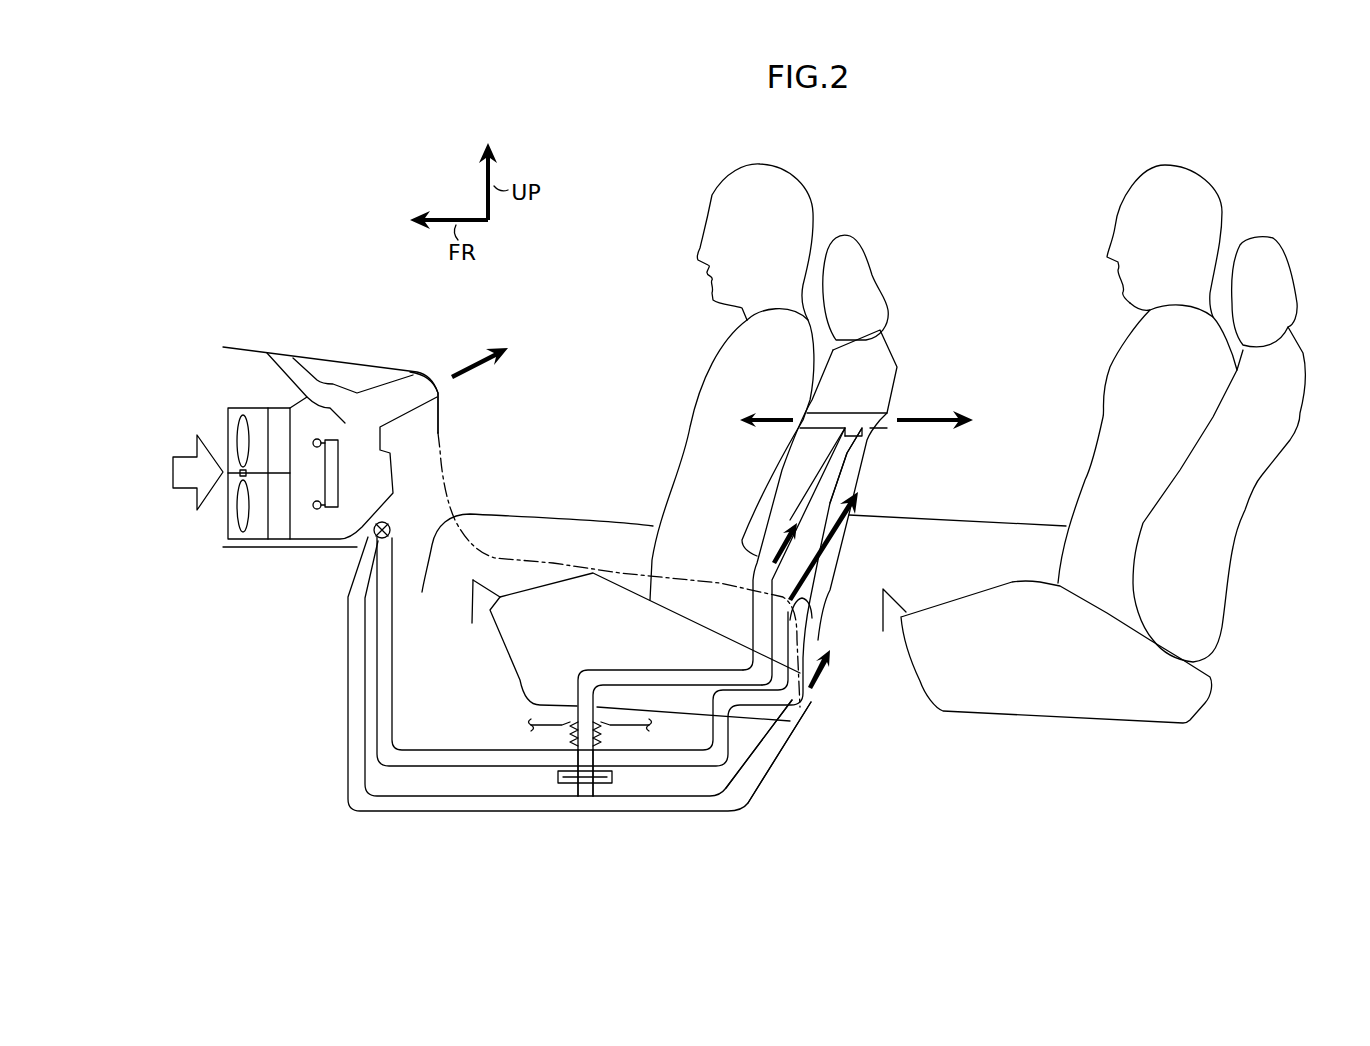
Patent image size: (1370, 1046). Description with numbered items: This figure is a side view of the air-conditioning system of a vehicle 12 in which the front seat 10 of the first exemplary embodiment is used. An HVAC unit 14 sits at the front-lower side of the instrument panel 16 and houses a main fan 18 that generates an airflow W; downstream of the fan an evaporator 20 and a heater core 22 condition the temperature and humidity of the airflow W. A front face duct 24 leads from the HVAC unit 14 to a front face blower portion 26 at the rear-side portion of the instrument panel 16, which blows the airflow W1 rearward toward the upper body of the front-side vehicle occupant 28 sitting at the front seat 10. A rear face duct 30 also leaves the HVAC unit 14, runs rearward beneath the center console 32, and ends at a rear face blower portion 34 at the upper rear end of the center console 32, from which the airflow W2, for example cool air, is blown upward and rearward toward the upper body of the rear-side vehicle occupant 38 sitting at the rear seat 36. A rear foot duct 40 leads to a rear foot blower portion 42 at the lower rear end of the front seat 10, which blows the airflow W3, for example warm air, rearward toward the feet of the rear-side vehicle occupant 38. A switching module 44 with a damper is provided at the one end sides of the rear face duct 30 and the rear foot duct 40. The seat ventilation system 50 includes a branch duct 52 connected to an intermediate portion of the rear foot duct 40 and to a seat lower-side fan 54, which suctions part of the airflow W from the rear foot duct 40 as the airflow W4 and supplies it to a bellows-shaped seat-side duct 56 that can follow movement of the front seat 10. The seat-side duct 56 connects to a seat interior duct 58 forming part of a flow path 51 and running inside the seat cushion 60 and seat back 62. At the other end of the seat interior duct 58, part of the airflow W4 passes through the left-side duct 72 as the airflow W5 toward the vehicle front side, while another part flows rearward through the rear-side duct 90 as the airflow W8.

The front seat 10 is at (912, 300).
The vehicle 12 is at (300, 292).
The HVAC unit 14 is at (238, 385).
The instrument panel 16 is at (322, 354).
The main fan 18 is at (256, 541).
The evaporator 20 is at (300, 541).
The heater core 22 is at (340, 480).
The front face duct 24 is at (377, 383).
The front face blower portion 26 is at (415, 372).
The front-side vehicle occupant 28 is at (690, 408).
The rear face duct 30 is at (392, 703).
The center console 32 is at (538, 562).
The rear face blower portion 34 is at (812, 612).
The rear seat 36 is at (1265, 510).
The rear-side vehicle occupant 38 is at (1105, 335).
The rear foot duct 40 is at (658, 812).
The rear foot blower portion 42 is at (808, 716).
The switching module 44 is at (373, 511).
The seat ventilation system 50 is at (768, 508).
The flow path 51 is at (600, 672).
The branch duct 52 is at (576, 785).
The seat lower-side fan 54 is at (605, 785).
The seat-side duct 56 is at (567, 730).
The seat interior duct 58 is at (643, 670).
The seat cushion 60 is at (505, 628).
The seat back 62 is at (900, 350).
The left-side duct 72 is at (815, 430).
The rear-side duct 90 is at (877, 432).
The airflow W is at (195, 448).
The airflow W1 is at (475, 368).
The airflow W2 is at (818, 592).
The airflow W3 is at (818, 705).
The airflow W4 is at (752, 542).
The airflow W5 is at (780, 418).
The airflow W8 is at (922, 418).